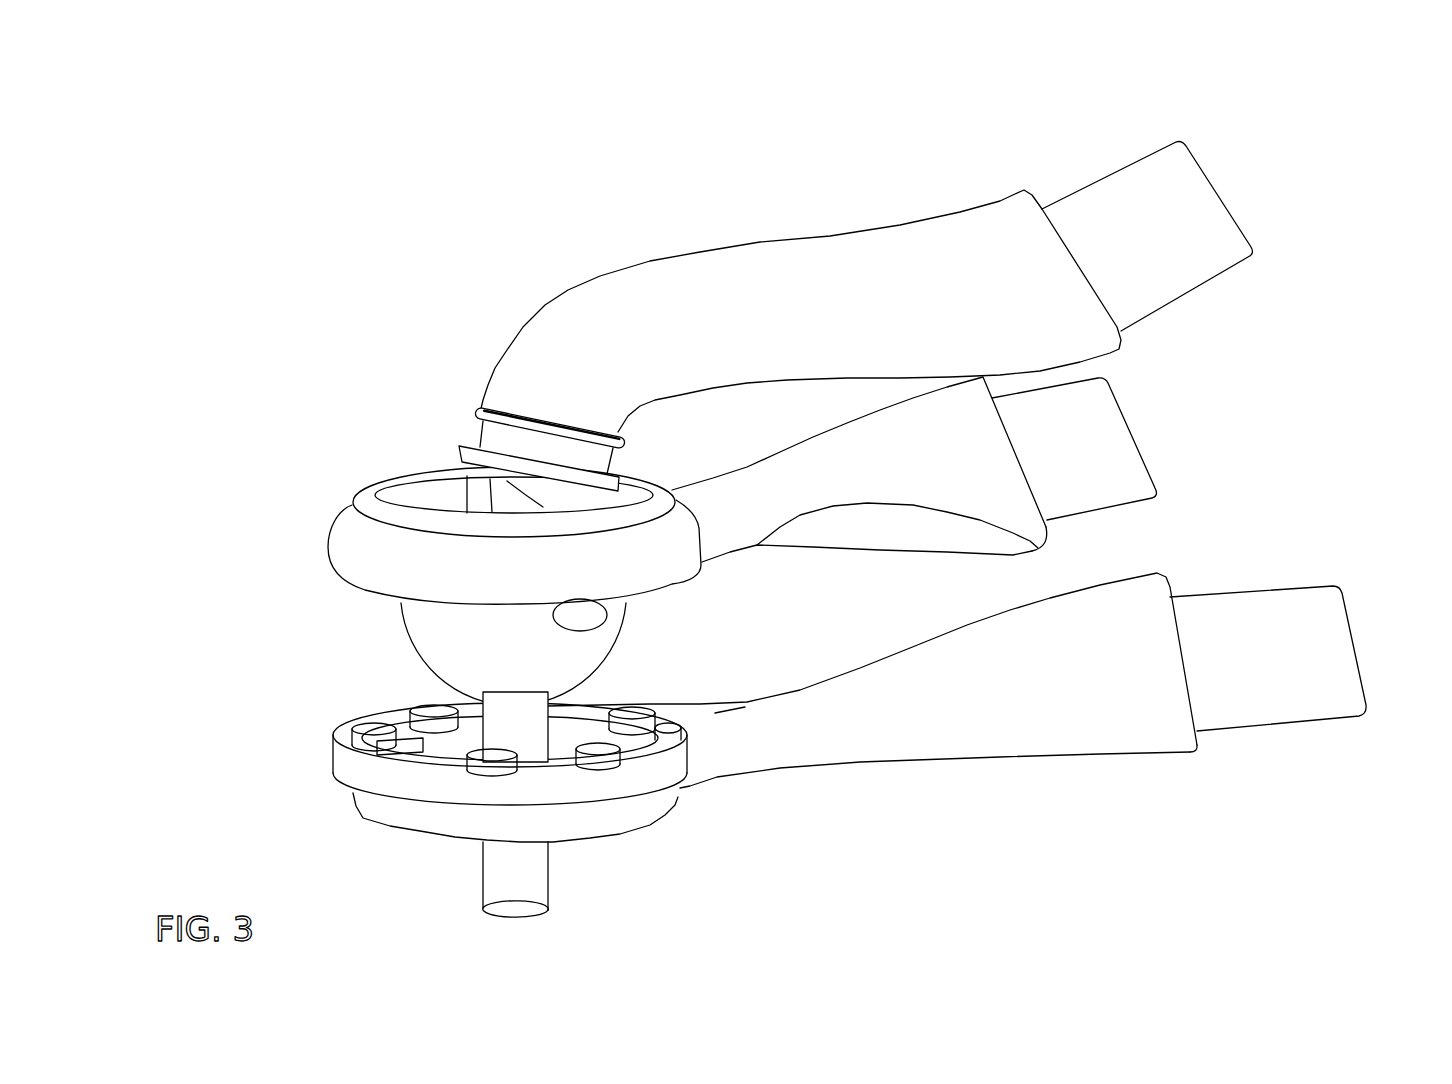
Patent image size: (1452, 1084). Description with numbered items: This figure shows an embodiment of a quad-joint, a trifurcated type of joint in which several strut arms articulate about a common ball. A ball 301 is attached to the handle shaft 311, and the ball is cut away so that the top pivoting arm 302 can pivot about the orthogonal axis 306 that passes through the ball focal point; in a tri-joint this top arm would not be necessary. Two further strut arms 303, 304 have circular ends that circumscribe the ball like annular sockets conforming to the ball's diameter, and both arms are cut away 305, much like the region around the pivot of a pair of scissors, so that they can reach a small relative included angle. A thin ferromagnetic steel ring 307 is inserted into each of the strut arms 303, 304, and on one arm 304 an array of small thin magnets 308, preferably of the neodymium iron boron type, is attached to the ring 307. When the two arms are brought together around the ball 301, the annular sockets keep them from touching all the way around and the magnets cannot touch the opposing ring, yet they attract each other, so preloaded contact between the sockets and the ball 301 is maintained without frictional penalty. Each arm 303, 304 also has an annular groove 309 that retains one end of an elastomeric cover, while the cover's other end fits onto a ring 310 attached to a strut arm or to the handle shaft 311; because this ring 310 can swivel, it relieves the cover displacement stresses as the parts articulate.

The ball 301 is at (473, 667).
The top pivoting arm 302 is at (785, 279).
The strut arm 303 is at (998, 498).
The strut arm 304 is at (1010, 678).
The cut away 305 is at (900, 530).
The orthogonal axis 306 is at (577, 612).
The ferromagnetic steel ring 307 is at (480, 607).
The magnets 308 is at (363, 723).
The annular groove 309 is at (347, 505).
The ring 310 is at (467, 432).
The handle shaft 311 is at (490, 897).